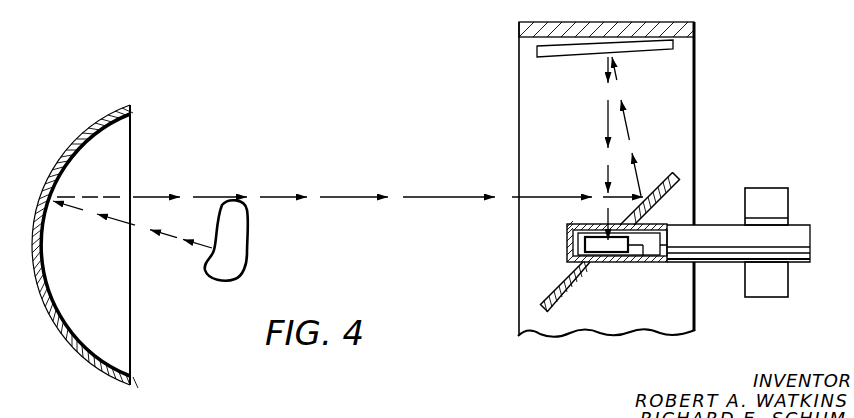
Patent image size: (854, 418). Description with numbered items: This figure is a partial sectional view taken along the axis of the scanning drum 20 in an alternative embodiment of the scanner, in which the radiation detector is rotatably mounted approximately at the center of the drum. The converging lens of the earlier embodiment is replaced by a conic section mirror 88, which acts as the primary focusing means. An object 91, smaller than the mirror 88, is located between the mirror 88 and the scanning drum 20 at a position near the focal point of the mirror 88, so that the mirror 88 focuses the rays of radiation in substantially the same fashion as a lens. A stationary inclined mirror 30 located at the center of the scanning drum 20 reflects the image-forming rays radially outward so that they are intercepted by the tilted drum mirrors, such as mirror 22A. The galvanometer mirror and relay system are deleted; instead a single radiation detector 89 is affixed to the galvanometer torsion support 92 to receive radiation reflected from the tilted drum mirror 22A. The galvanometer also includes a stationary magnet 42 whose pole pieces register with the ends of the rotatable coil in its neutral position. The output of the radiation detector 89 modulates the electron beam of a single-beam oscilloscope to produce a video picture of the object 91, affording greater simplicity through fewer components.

The scanning drum 20 is at (662, 23).
The tilted drum mirror 22A is at (565, 57).
The inclined mirror 30 is at (668, 173).
The stationary magnet 42 is at (777, 188).
The conic section mirror 88 is at (71, 146).
The radiation detector 89 is at (601, 253).
The object 91 is at (236, 258).
The galvanometer torsion support 92 is at (643, 258).